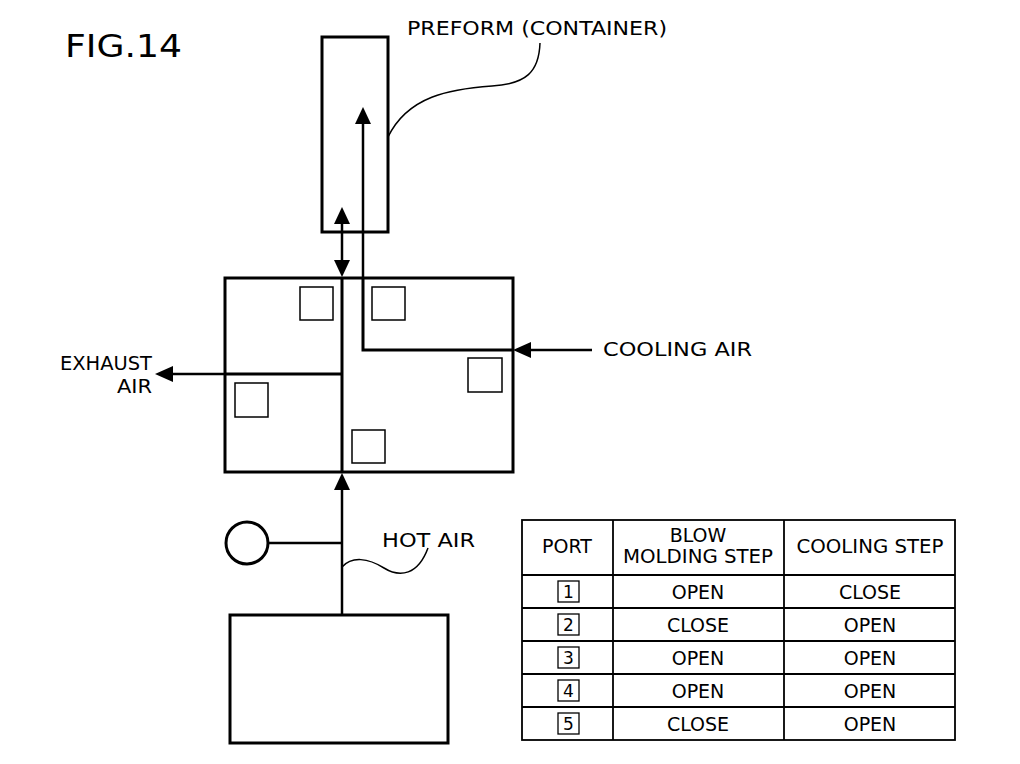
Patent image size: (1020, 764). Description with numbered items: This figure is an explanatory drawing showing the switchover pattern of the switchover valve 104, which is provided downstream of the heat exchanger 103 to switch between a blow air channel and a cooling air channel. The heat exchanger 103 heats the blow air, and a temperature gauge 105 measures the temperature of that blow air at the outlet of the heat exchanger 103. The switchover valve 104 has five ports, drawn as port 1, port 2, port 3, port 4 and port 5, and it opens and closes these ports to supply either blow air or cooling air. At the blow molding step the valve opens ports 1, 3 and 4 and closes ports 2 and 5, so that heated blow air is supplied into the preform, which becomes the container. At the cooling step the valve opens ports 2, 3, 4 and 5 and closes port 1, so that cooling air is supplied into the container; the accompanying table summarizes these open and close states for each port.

The heat exchanger 103 is at (230, 687).
The switchover valve 104 is at (438, 278).
The temperature gauge 105 is at (226, 547).
The port 1 is at (368, 446).
The port 2 is at (485, 375).
The port 3 is at (388, 303).
The port 4 is at (316, 303).
The port 5 is at (251, 400).